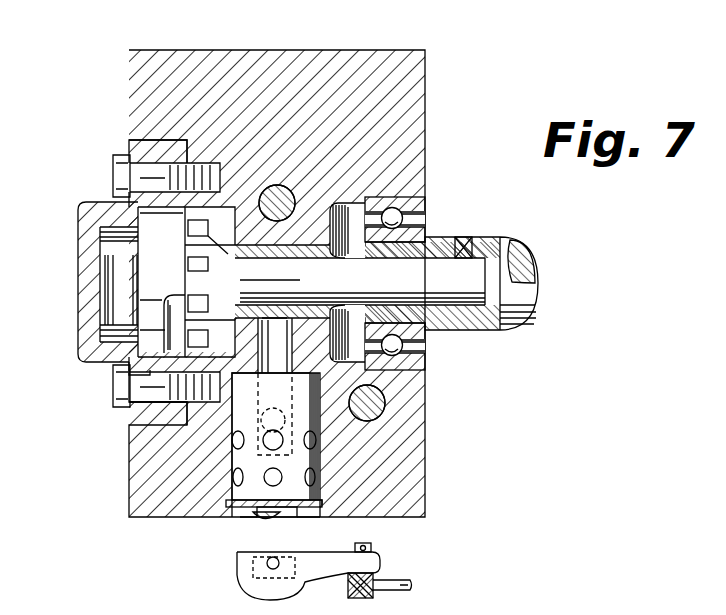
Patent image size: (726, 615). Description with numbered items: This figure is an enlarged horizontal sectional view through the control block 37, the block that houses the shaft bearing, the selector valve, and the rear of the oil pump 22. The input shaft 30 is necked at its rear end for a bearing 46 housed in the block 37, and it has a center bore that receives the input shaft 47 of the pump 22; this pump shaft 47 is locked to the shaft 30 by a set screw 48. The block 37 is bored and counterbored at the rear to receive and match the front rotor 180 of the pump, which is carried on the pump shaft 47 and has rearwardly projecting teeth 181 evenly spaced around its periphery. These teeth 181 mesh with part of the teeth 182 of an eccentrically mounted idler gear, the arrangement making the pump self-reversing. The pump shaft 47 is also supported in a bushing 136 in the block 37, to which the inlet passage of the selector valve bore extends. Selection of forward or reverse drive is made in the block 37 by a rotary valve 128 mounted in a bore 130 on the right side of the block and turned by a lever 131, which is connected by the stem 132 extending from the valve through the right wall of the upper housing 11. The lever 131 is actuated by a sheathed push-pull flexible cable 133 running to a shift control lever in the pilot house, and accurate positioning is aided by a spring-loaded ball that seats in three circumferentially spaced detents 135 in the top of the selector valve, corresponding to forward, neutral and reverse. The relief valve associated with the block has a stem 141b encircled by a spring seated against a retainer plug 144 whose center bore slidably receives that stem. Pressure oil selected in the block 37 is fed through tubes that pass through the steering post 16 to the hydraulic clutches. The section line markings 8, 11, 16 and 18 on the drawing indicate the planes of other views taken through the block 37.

The section line 8 is at (300, 34).
The upper housing 11 is at (215, 443).
The steering post 16 is at (162, 122).
The section line 18 is at (230, 122).
The pump 22 is at (71, 331).
The input shaft 30 is at (530, 254).
The block 37 is at (126, 490).
The bearing 46 is at (422, 217).
The input shaft of the pump 47 is at (458, 284).
The set screw 48 is at (470, 237).
The rotary valve 128 is at (322, 458).
The bore 130 is at (233, 502).
The lever 131 is at (328, 570).
The stem 132 is at (300, 523).
The push-pull flexible cable 133 is at (400, 583).
The detents 135 is at (244, 515).
The bushing 136 is at (304, 249).
The front rotor 180 is at (226, 270).
The teeth 181 is at (196, 241).
The teeth 182 is at (198, 298).
The retainer plug 144 is at (148, 605).
The stem 141b is at (201, 605).